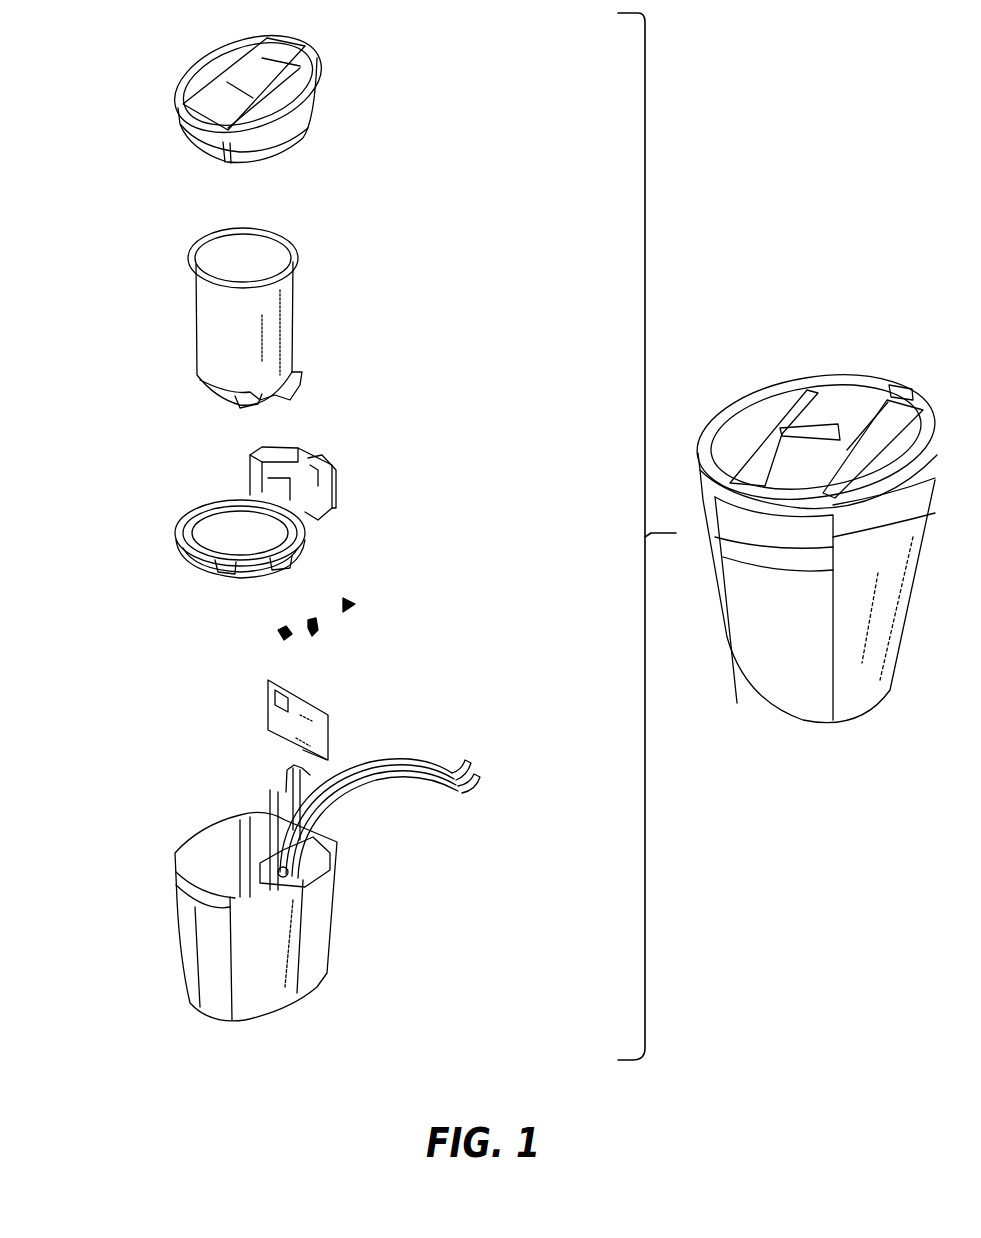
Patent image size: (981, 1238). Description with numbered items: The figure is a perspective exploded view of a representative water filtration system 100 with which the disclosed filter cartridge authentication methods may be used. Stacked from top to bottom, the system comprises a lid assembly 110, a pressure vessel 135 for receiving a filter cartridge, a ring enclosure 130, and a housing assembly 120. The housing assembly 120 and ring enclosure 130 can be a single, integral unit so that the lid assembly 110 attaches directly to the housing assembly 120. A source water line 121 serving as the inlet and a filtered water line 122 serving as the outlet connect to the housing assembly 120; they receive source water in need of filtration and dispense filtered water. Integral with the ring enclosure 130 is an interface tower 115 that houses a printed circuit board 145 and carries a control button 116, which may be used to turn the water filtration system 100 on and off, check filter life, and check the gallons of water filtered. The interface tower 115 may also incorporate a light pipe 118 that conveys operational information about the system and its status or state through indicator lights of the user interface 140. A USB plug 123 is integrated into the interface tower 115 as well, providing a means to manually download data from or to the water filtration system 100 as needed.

The water filtration system 100 is at (470, 142).
The lid assembly 110 is at (180, 118).
The interface tower 115 is at (243, 470).
The control button 116 is at (355, 606).
The light pipe 118 is at (318, 637).
The housing assembly 120 is at (330, 915).
The source water line 121 is at (440, 778).
The filtered water line 122 is at (470, 788).
The USB plug 123 is at (283, 632).
The ring enclosure 130 is at (180, 537).
The pressure vessel 135 is at (305, 321).
The user interface 140 is at (333, 474).
The printed circuit board 145 is at (327, 735).